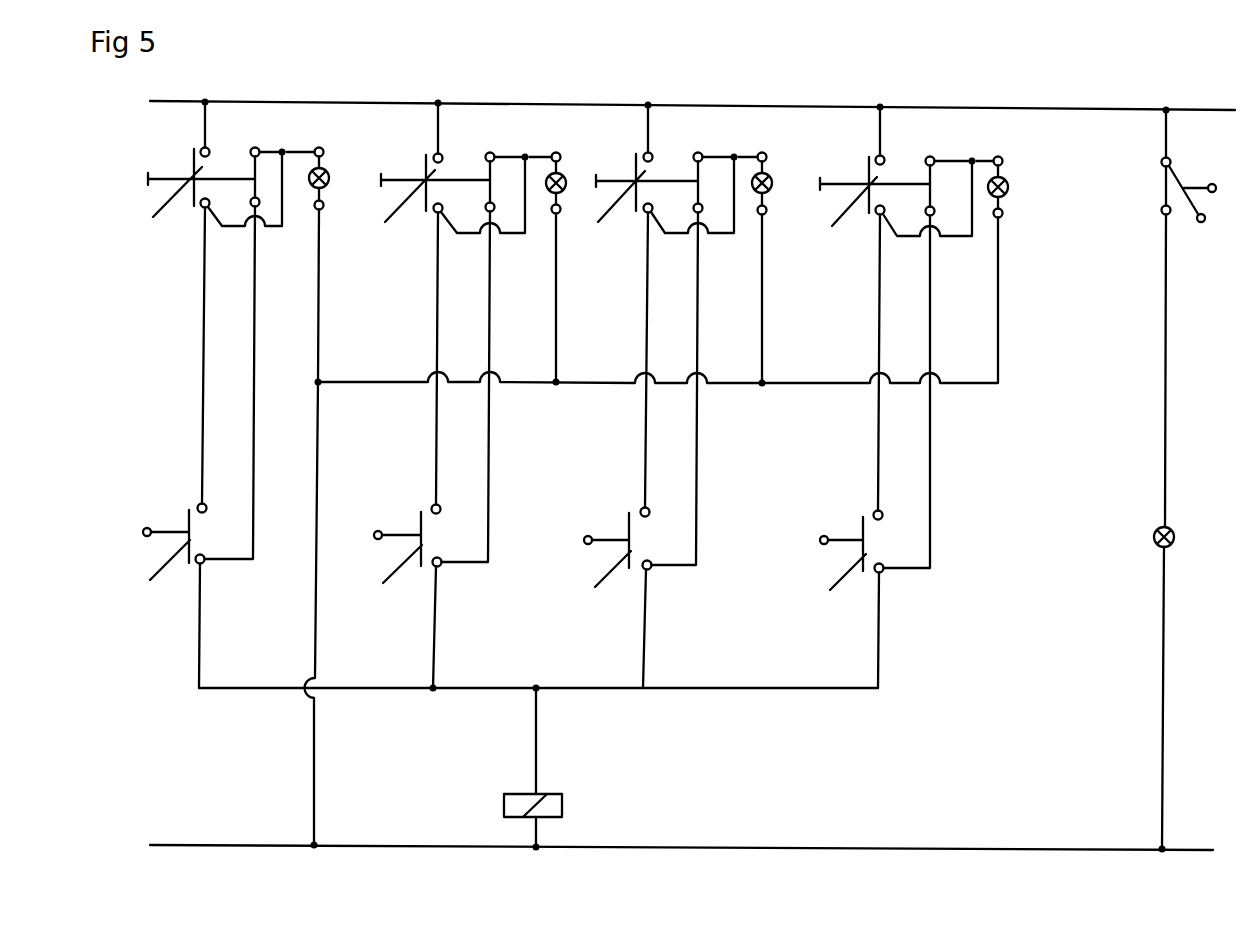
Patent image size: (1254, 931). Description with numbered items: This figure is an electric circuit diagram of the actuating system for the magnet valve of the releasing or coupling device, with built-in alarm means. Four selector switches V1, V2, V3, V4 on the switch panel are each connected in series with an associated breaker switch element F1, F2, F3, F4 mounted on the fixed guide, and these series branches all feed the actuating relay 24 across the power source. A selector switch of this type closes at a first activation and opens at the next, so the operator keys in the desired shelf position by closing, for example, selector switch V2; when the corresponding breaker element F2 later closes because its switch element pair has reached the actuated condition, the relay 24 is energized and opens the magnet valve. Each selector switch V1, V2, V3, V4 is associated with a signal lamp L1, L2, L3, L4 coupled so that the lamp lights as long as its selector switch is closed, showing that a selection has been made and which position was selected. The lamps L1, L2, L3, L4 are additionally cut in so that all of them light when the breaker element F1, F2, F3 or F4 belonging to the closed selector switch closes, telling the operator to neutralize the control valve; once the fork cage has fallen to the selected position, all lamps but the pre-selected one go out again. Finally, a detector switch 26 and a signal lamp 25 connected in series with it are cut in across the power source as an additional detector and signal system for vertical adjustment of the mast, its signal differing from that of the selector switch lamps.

The selector switch V1 is at (170, 186).
The selector switch V2 is at (416, 189).
The selector switch V3 is at (633, 188).
The selector switch V4 is at (865, 192).
The signal lamp L1 is at (327, 170).
The signal lamp L2 is at (565, 172).
The signal lamp L3 is at (772, 172).
The signal lamp L4 is at (1006, 177).
The switch element F1 is at (161, 545).
The switch element F2 is at (391, 547).
The switch element F3 is at (606, 551).
The switch element F4 is at (842, 552).
The actuating relay 24 is at (552, 805).
The signal lamp 25 is at (1155, 546).
The detector switch 26 is at (1182, 175).